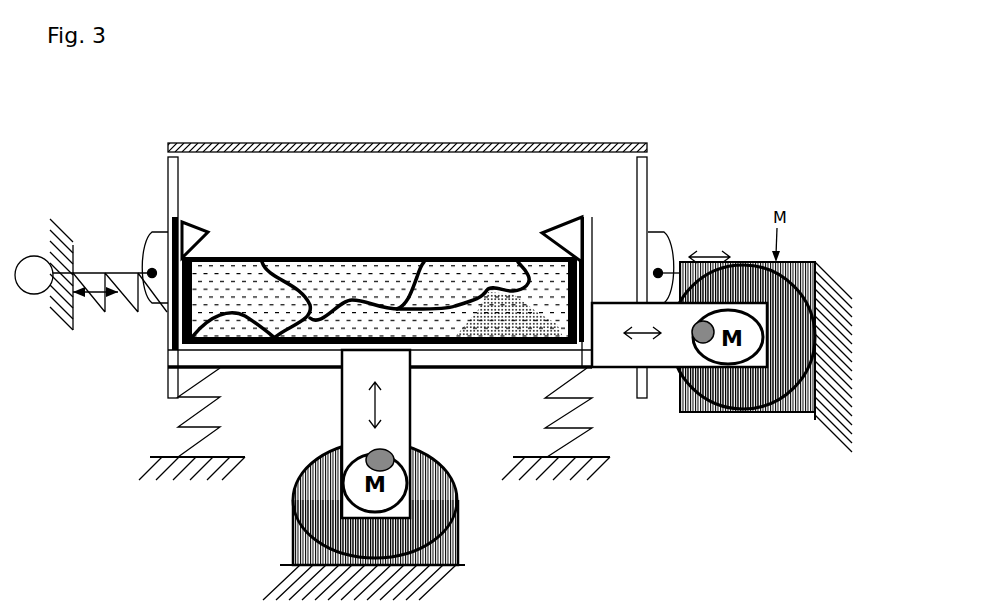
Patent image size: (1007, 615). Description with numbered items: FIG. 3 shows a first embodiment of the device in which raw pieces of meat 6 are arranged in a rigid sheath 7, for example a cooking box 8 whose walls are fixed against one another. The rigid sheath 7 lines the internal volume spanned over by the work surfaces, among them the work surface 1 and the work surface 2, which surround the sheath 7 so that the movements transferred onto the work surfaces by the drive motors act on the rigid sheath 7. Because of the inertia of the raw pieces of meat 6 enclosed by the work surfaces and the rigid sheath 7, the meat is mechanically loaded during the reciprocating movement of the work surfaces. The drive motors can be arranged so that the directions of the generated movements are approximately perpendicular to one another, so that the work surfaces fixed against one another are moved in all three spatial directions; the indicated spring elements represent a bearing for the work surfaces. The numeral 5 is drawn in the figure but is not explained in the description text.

The work surface 1 is at (313, 145).
The work surface 2 is at (185, 257).
The horizontal drive 5 is at (93, 266).
The raw pieces of meat 6 is at (276, 315).
The rigid sheath 7 is at (348, 222).
The cooking box 8 is at (379, 340).